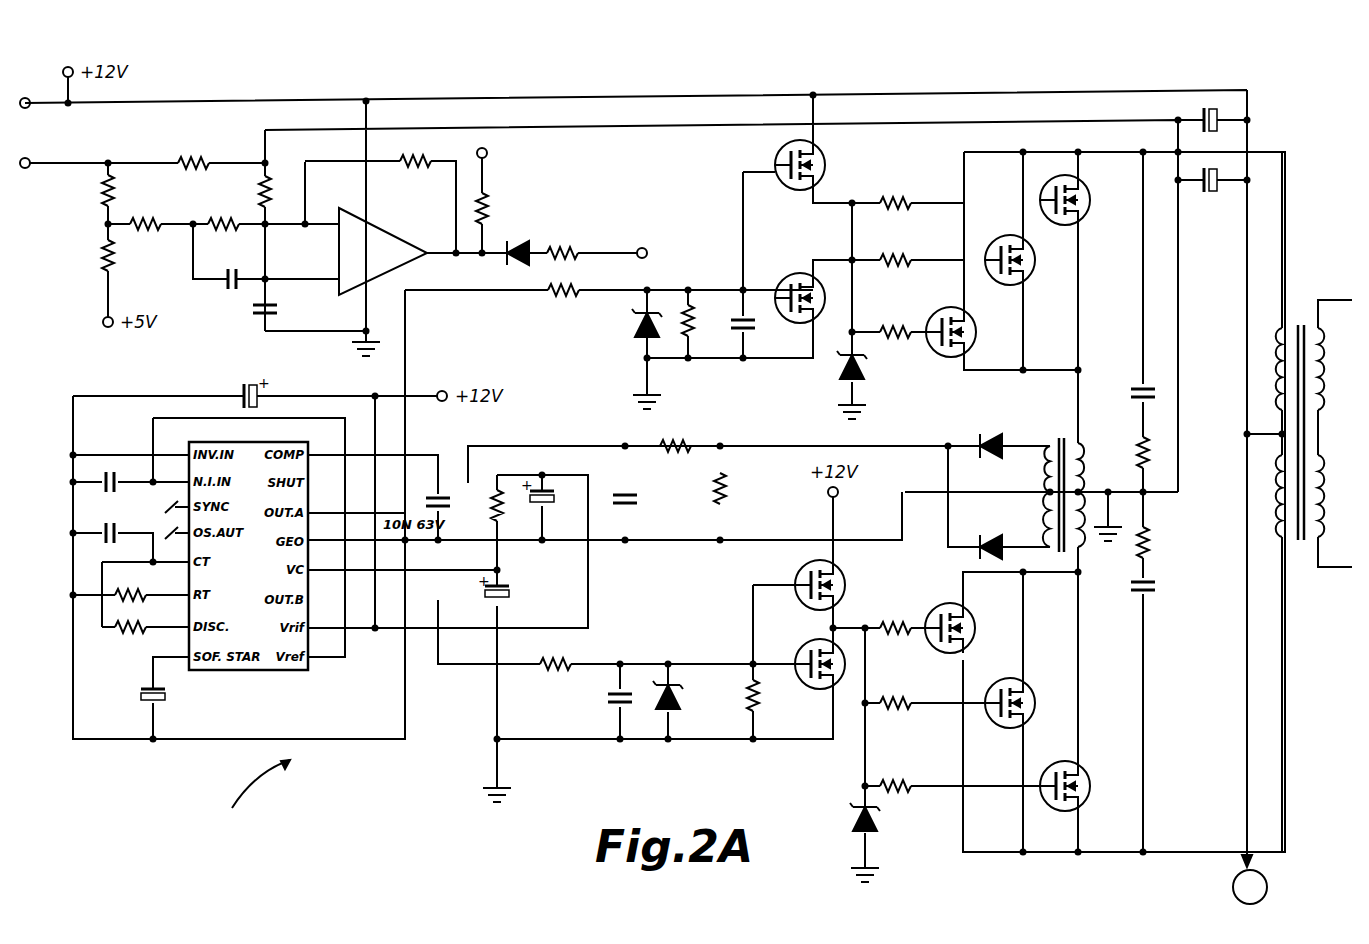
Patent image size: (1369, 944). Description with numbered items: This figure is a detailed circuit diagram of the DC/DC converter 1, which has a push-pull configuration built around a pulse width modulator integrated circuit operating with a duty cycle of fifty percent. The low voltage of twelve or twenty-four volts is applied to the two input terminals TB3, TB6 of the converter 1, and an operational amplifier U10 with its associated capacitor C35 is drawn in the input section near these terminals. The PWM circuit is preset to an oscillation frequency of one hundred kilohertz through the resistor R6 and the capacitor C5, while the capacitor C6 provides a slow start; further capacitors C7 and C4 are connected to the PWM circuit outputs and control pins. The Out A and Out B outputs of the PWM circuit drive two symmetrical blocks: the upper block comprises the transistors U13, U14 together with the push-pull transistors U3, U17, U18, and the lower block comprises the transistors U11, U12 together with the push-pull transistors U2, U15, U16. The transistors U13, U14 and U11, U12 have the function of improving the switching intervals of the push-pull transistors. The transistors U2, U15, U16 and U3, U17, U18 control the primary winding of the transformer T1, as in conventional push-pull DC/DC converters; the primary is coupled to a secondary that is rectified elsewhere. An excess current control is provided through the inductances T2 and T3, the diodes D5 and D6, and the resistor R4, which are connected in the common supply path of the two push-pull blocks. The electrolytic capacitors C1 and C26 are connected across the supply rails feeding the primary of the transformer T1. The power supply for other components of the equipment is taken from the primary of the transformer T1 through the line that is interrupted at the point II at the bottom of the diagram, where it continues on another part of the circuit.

The operational amplifier U10 is at (383, 250).
The transistor U14 is at (818, 165).
The transistor U13 is at (791, 288).
The transistor U18 is at (1082, 197).
The transistor U17 is at (1029, 258).
The transistor U3 is at (964, 330).
The transistor U12 is at (837, 583).
The transistor U11 is at (811, 659).
The transistor U2 is at (961, 625).
The transistor U15 is at (1023, 702).
The transistor U16 is at (1078, 784).
The capacitor C1 is at (1205, 113).
The capacitor C26 is at (1212, 189).
The capacitor C35 is at (286, 315).
The capacitor C5 is at (98, 507).
The capacitor C6 is at (159, 692).
The capacitor C7 is at (451, 500).
The capacitor C4 is at (638, 494).
The resistor R4 is at (734, 488).
The resistor R6 is at (130, 585).
The diode D5 is at (988, 427).
The diode D6 is at (985, 534).
The transformer T1 is at (1300, 468).
The inductance T2 is at (1071, 519).
The inductance T3 is at (1072, 495).
The input terminal TB6 is at (19, 115).
The input terminal TB3 is at (19, 175).
The line interruption point II is at (1250, 879).
The DC/DC converter 1 is at (248, 791).